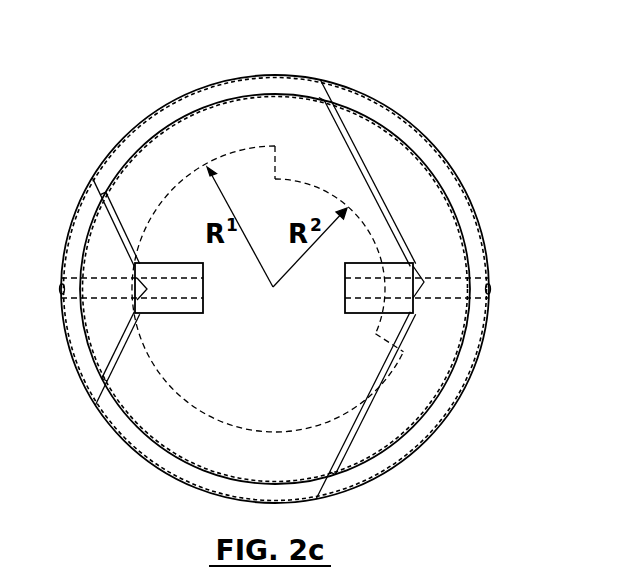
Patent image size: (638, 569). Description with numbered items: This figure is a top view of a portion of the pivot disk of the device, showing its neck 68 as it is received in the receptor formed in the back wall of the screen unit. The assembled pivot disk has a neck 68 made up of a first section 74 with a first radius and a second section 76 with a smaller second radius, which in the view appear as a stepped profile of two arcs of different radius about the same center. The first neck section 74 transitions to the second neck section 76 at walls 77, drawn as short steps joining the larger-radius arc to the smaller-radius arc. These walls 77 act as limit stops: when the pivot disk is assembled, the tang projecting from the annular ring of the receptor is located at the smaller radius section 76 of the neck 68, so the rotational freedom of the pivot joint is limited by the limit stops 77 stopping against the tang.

The neck 68 is at (233, 151).
The first section 74 is at (168, 193).
The second section 76 is at (312, 183).
The walls 77 is at (277, 166).